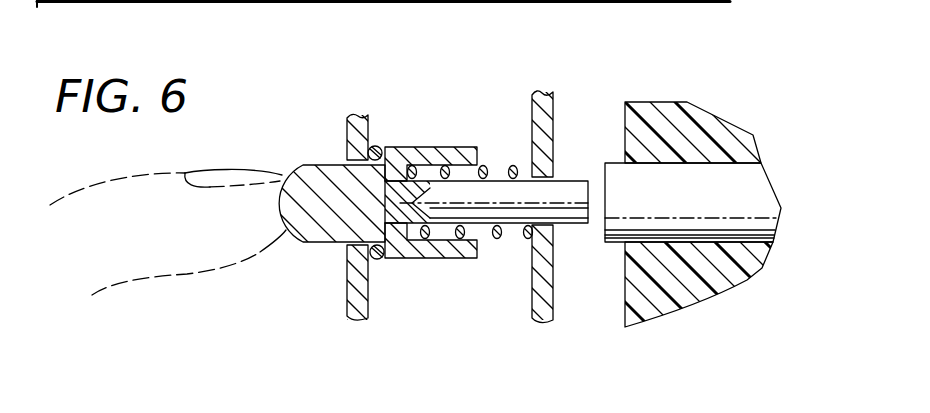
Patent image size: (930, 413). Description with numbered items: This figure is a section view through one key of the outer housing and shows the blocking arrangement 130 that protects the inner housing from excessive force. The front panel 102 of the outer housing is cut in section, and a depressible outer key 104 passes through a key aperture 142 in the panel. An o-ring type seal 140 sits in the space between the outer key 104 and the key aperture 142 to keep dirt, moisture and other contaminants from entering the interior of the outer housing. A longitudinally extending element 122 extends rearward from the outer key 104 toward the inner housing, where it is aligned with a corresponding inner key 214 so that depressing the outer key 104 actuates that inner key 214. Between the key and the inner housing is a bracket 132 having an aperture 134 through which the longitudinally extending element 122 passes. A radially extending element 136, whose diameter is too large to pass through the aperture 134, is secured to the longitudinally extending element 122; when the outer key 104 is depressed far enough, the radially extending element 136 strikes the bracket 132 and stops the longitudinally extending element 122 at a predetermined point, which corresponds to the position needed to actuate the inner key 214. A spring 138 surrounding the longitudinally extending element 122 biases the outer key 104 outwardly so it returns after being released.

The blocking arrangement 130 is at (336, 76).
The outer key 104 is at (323, 237).
The key aperture 142 is at (330, 165).
The front panel 102 is at (347, 302).
The o-ring type seal 140 is at (380, 260).
The radially extending element 136 is at (433, 148).
The spring 138 is at (512, 166).
The aperture 134 is at (572, 180).
The longitudinally extending element 122 is at (567, 217).
The bracket 132 is at (543, 92).
The inner key 214 is at (758, 187).